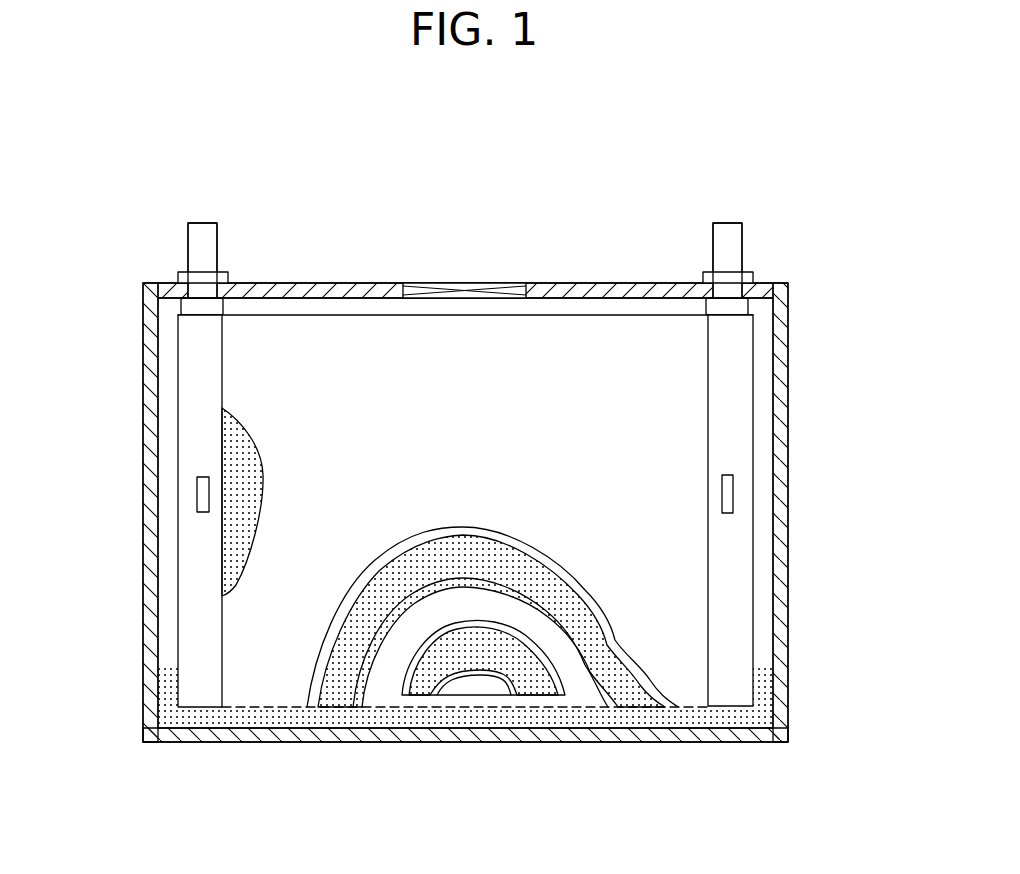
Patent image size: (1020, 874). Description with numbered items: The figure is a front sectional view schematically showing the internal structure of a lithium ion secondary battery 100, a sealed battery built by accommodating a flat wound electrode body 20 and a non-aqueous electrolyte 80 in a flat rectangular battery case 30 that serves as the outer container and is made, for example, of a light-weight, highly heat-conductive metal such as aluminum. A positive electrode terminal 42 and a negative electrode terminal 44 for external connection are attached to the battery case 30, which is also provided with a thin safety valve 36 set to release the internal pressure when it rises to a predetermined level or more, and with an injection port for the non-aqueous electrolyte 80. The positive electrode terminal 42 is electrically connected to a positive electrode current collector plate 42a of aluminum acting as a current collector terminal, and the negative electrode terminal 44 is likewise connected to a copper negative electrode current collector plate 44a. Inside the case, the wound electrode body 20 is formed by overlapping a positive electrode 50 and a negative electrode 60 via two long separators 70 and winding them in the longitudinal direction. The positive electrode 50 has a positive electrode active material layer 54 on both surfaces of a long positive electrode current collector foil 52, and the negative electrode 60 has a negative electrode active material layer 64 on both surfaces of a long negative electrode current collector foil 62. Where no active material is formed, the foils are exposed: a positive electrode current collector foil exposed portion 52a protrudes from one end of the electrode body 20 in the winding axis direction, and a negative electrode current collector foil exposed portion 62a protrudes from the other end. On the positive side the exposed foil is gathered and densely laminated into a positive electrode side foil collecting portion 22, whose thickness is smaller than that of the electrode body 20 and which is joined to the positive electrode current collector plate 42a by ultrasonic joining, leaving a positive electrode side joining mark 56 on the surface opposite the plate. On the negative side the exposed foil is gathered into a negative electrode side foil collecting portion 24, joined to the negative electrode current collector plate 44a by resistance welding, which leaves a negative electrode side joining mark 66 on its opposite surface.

The lithium ion secondary battery 100 is at (789, 243).
The wound electrode body 20 is at (333, 352).
The positive electrode side foil collecting portion 22 is at (178, 488).
The negative electrode side foil collecting portion 24 is at (753, 497).
The battery case 30 is at (790, 410).
The safety valve 36 is at (465, 288).
The positive electrode terminal 42 is at (202, 230).
The positive electrode current collector plate 42a is at (207, 390).
The negative electrode terminal 44 is at (728, 230).
The negative electrode current collector plate 44a is at (728, 353).
The positive electrode 50 is at (188, 589).
The positive electrode current collector foil 52 is at (178, 587).
The positive electrode current collector foil exposed portion 52a is at (197, 672).
The positive electrode active material layer 54 is at (247, 465).
The positive electrode side joining mark 56 is at (199, 478).
The negative electrode 60 is at (643, 589).
The negative electrode current collector foil 62 is at (753, 538).
The negative electrode current collector foil exposed portion 62a is at (735, 590).
The negative electrode active material layer 64 is at (420, 683).
The negative electrode side joining mark 66 is at (733, 480).
The separator 70 is at (265, 627).
The non-aqueous electrolyte 80 is at (686, 713).